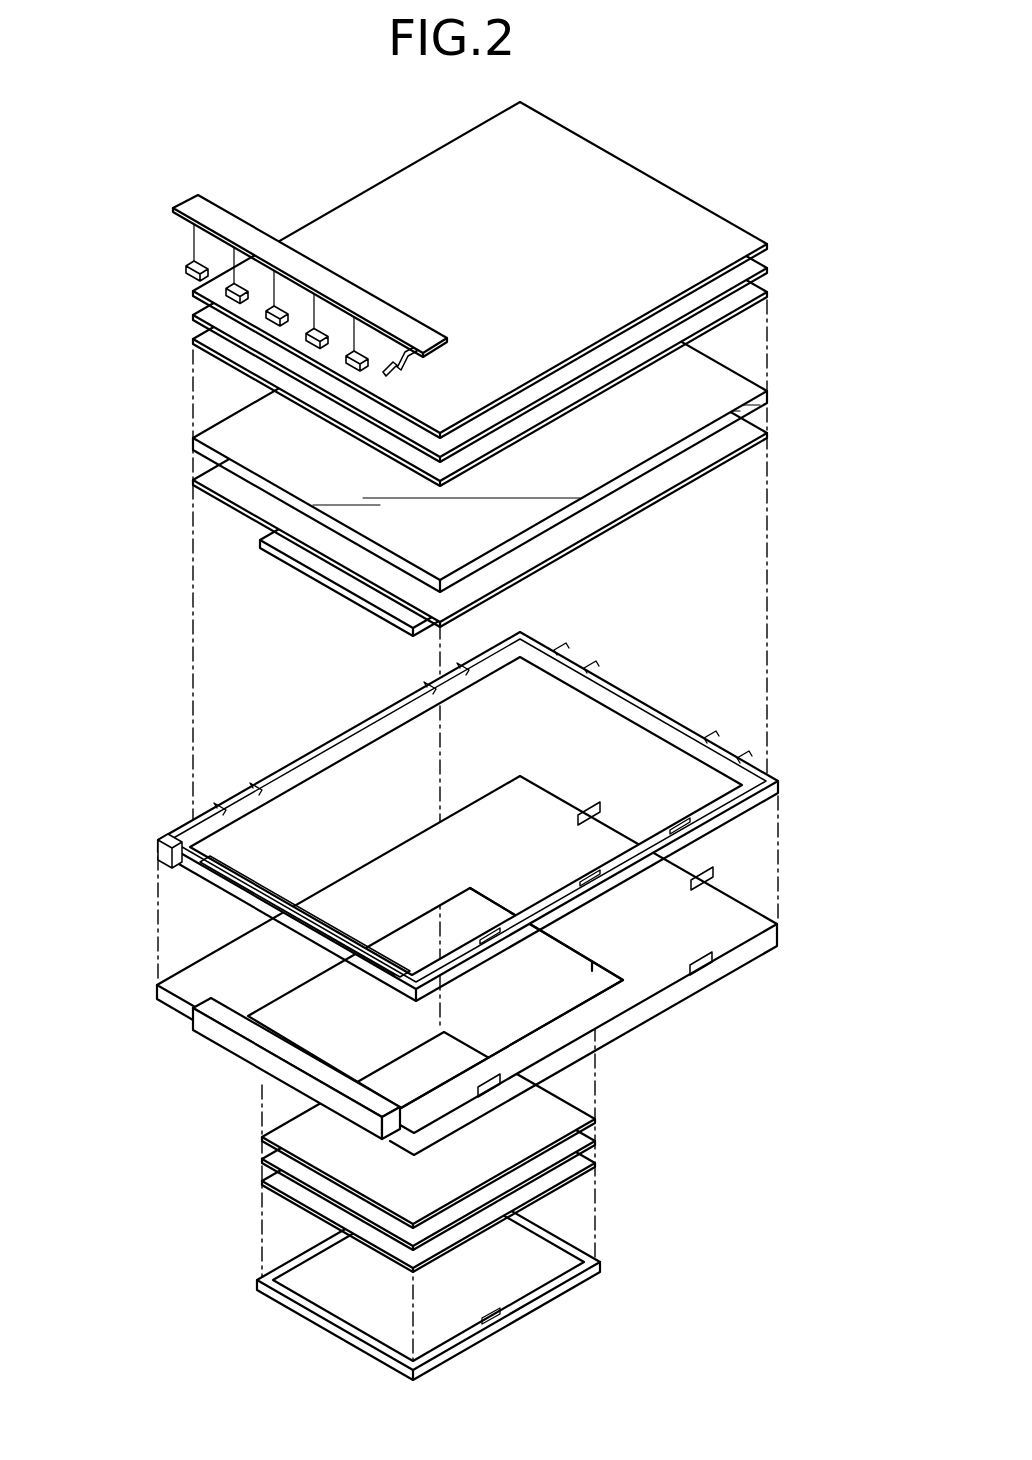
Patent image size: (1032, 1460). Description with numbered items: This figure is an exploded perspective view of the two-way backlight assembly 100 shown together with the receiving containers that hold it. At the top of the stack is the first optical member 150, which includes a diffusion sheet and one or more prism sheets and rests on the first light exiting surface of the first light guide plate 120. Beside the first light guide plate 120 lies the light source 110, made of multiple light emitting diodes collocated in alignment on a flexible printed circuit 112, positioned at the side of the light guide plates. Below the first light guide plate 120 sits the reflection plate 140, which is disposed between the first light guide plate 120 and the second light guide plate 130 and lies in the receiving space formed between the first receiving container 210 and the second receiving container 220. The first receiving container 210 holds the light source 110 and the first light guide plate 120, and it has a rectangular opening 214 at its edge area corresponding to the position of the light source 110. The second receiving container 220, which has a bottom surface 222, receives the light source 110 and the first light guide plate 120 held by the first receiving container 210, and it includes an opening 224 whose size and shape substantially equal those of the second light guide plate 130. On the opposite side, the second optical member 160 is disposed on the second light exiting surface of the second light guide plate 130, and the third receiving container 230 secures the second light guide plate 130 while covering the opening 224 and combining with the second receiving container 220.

The backlight assembly 100 is at (312, 112).
The light source 110 is at (192, 268).
The flexible printed circuit 112 is at (197, 208).
The first light guide plate 120 is at (770, 397).
The second light guide plate 130 is at (337, 573).
The reflection plate 140 is at (710, 455).
The first optical member 150 is at (773, 243).
The second optical member 160 is at (603, 1120).
The first receiving container 210 is at (467, 816).
The opening 214 is at (207, 877).
The second receiving container 220 is at (511, 965).
The bottom surface 222 is at (727, 925).
The opening 224 is at (547, 984).
The third receiving container 230 is at (603, 1270).